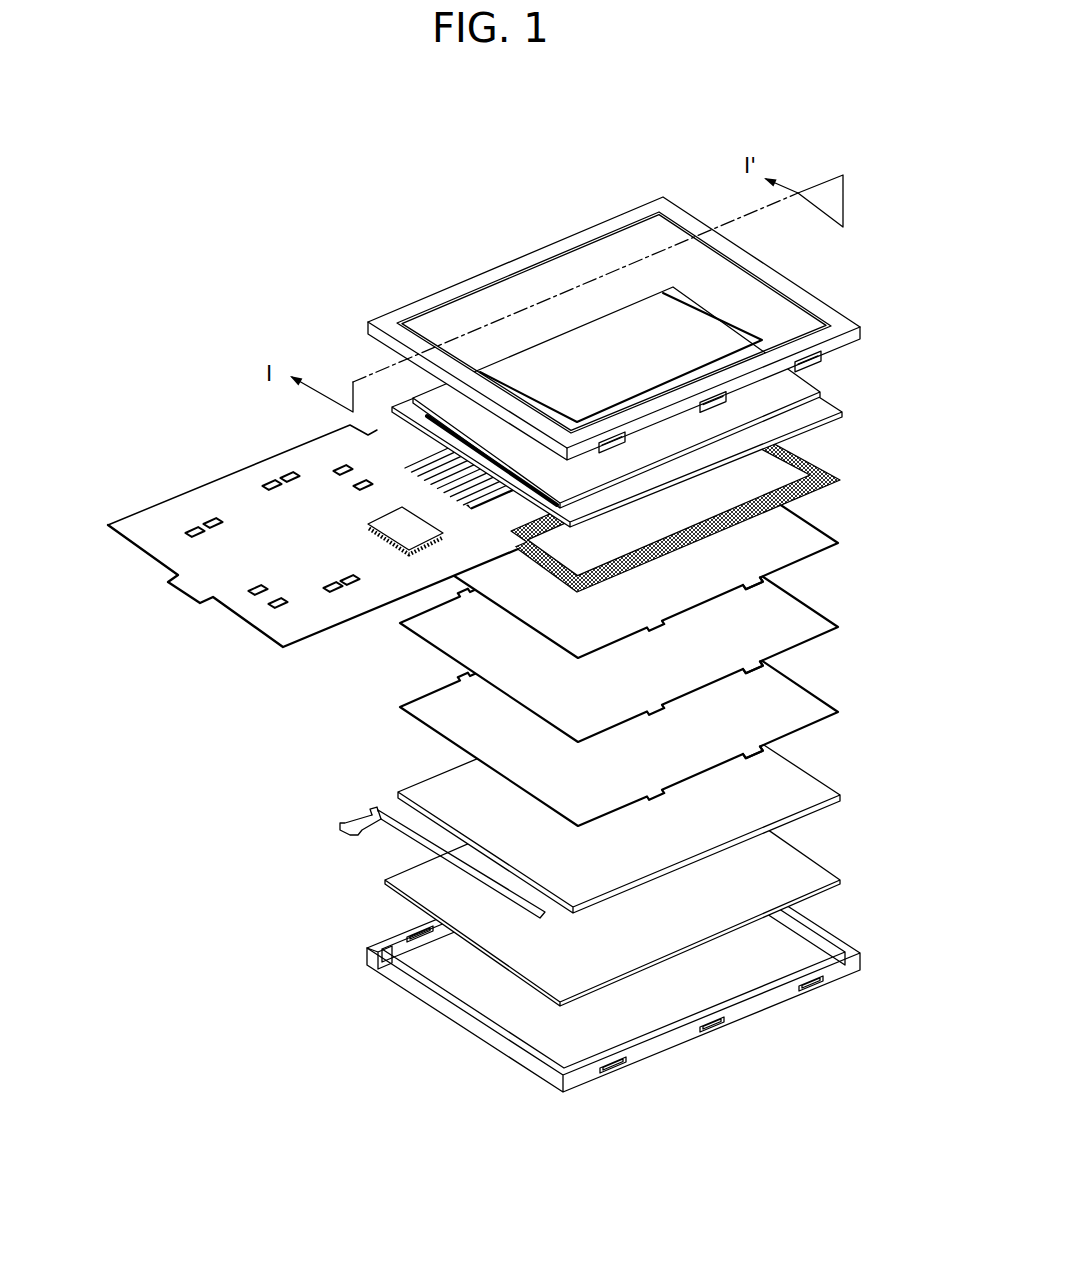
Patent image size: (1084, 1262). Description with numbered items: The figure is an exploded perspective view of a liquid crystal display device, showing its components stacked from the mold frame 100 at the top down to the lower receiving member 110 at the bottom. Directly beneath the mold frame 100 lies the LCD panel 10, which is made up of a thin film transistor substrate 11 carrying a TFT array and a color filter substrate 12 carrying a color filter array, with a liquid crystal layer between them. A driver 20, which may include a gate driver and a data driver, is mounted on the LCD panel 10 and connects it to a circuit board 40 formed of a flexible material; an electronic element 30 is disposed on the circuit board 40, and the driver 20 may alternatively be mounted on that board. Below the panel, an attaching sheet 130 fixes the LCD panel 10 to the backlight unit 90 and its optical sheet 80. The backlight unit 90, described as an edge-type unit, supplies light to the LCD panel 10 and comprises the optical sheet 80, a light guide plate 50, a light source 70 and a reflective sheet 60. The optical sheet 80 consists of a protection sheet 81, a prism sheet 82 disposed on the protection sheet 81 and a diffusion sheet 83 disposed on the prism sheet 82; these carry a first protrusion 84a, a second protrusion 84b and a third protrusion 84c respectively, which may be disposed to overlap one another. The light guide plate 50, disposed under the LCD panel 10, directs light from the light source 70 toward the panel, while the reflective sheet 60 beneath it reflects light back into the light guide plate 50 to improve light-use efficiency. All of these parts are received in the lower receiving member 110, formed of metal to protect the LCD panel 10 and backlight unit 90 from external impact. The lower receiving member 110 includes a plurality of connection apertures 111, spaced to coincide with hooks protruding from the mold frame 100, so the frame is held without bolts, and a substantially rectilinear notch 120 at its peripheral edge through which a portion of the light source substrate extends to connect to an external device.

The LCD panel 10 is at (661, 407).
The thin film transistor substrate 11 is at (828, 418).
The color filter substrate 12 is at (814, 398).
The driver 20 is at (437, 422).
The electronic element 30 is at (377, 520).
The circuit board 40 is at (313, 536).
The light guide plate 50 is at (397, 790).
The reflective sheet 60 is at (394, 880).
The light source 70 is at (335, 838).
The optical sheet 80 is at (253, 665).
The protection sheet 81 is at (559, 555).
The prism sheet 82 is at (559, 625).
The diffusion sheet 83 is at (558, 709).
The first protrusion 84a is at (770, 586).
The second protrusion 84b is at (770, 669).
The third protrusion 84c is at (770, 754).
The backlight unit 90 is at (213, 668).
The mold frame 100 is at (428, 291).
The lower receiving member 110 is at (554, 959).
The connection aperture 111 is at (718, 1028).
The notch 120 is at (382, 960).
The attaching sheet 130 is at (841, 484).